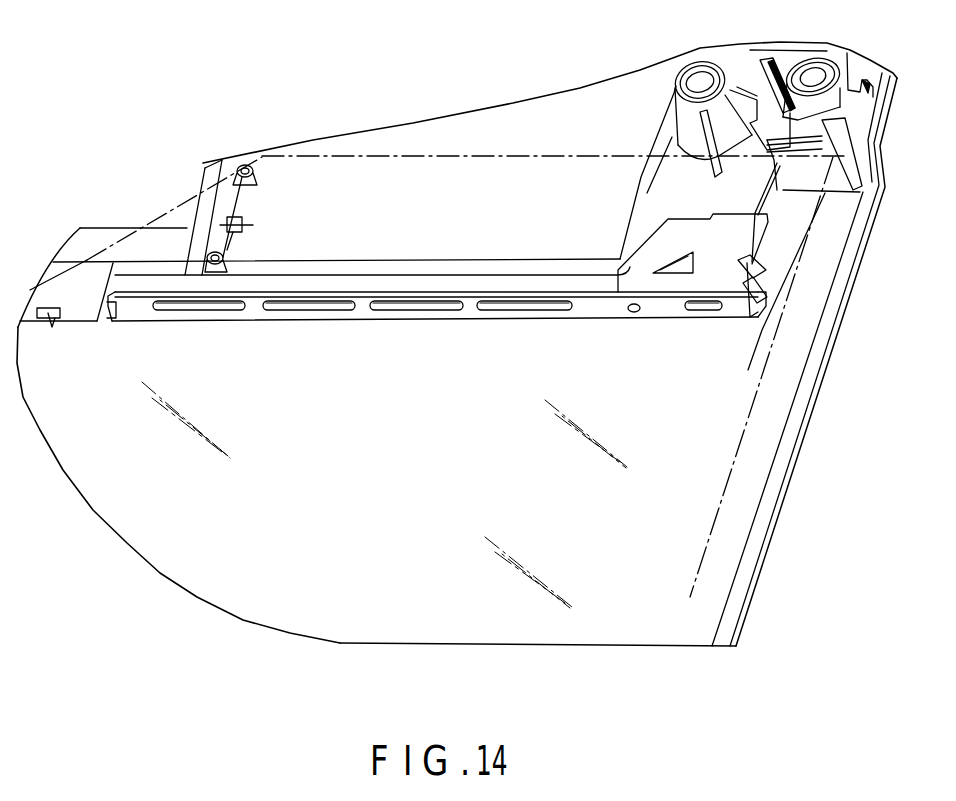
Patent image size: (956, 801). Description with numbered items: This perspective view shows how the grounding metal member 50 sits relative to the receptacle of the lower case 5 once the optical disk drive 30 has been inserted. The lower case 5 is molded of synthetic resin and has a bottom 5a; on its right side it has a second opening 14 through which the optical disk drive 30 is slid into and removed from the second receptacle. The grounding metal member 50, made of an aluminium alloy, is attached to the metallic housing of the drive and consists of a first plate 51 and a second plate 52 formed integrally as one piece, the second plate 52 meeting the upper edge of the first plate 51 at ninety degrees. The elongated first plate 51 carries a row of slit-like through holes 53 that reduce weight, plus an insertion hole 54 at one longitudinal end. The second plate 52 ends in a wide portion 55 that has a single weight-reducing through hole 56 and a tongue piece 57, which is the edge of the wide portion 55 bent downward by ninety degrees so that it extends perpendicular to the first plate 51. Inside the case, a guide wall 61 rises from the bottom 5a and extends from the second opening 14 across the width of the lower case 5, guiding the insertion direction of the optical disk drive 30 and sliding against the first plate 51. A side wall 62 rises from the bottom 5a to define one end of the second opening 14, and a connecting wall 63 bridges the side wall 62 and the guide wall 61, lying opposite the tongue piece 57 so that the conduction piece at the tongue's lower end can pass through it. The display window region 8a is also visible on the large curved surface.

The lower case 5 is at (887, 117).
The bottom 5a is at (295, 624).
The display window 8a is at (424, 468).
The second opening 14 is at (782, 480).
The optical disk drive 30 is at (413, 156).
The grounding metal member 50 is at (573, 294).
The first plate 51 is at (593, 308).
The second plate 52 is at (390, 283).
The through holes 53 is at (213, 306).
The insertion hole 54 is at (636, 313).
The wide portion 55 is at (732, 230).
The through hole 56 is at (680, 268).
The tongue piece 57 is at (763, 251).
The guide wall 61 is at (767, 295).
The side wall 62 is at (813, 166).
The connecting wall 63 is at (777, 197).